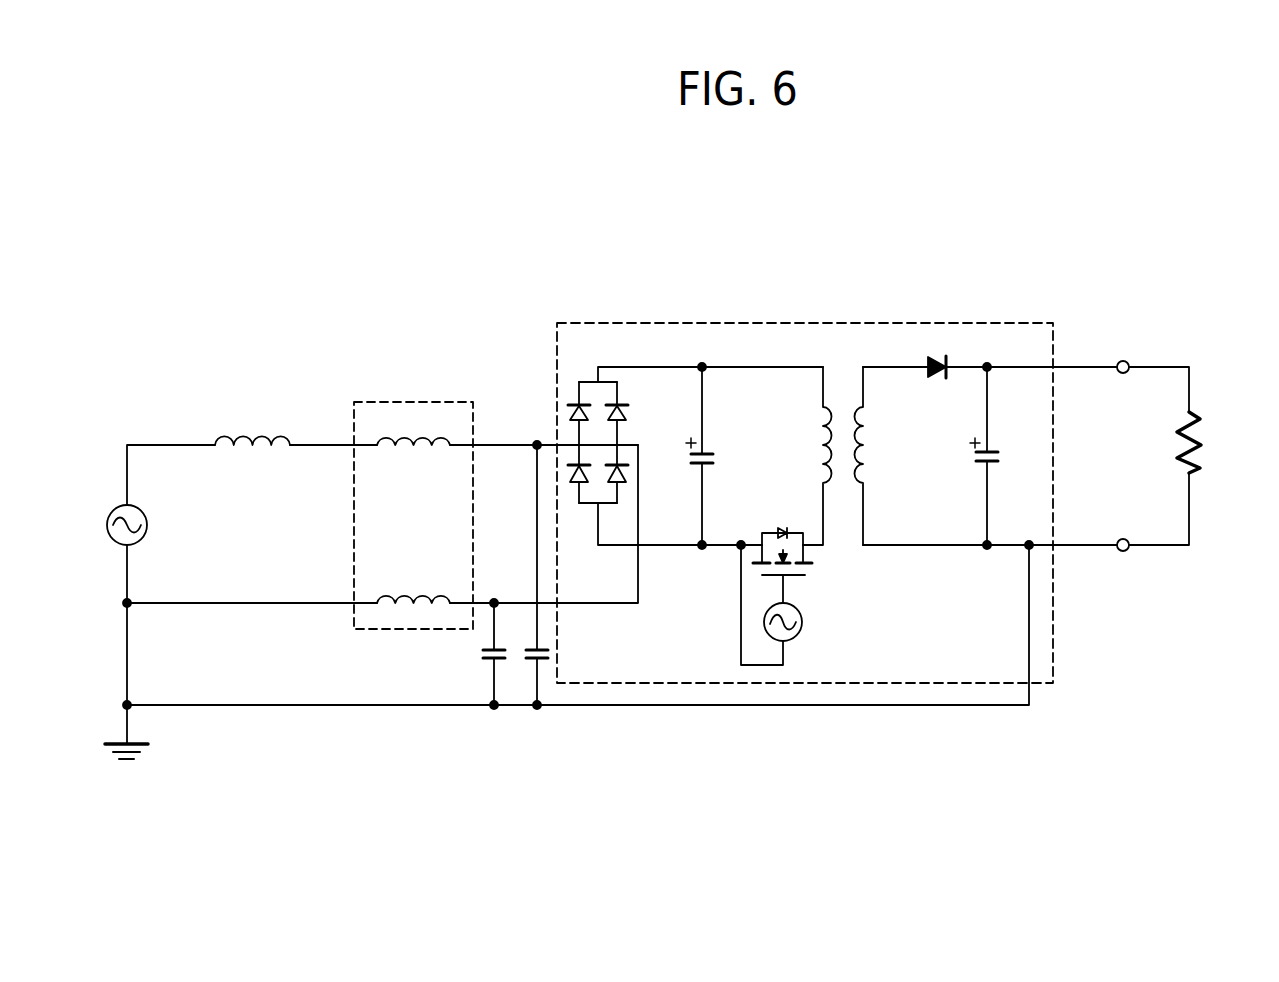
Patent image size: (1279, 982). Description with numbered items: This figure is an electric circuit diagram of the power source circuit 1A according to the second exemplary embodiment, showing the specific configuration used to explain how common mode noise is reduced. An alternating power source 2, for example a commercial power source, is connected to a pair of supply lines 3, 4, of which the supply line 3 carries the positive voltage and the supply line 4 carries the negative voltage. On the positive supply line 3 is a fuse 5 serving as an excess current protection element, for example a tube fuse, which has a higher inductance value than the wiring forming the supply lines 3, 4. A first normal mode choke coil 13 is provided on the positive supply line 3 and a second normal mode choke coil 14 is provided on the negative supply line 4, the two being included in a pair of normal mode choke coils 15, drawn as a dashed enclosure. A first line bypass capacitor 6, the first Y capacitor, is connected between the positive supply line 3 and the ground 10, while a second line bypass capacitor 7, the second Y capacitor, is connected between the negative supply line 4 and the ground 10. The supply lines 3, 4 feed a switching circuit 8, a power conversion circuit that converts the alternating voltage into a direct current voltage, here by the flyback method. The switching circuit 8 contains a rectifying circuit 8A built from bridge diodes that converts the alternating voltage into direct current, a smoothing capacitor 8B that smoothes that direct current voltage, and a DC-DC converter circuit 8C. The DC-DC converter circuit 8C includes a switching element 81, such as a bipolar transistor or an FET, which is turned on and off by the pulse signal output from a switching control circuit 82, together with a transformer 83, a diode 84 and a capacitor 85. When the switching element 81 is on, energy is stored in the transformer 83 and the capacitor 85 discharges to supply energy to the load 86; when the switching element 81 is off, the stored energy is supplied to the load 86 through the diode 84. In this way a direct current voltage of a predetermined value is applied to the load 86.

The power source circuit 1A is at (800, 246).
The alternating power source 2 is at (106, 522).
The supply line 3 is at (125, 468).
The supply line 4 is at (153, 606).
The fuse 5 is at (237, 441).
The first line bypass capacitor 6 is at (534, 659).
The second line bypass capacitor 7 is at (481, 656).
The switching circuit 8 is at (1031, 322).
The rectifying circuit 8A is at (566, 405).
The smoothing capacitor 8B is at (706, 451).
The DC-DC converter circuit 8C is at (842, 404).
The ground 10 is at (215, 707).
The first normal mode choke coil 13 is at (385, 438).
The second normal mode choke coil 14 is at (395, 605).
The pair of normal mode choke coils 15 is at (420, 401).
The switching element 81 is at (813, 564).
The switching control circuit 82 is at (805, 633).
The transformer 83 is at (827, 426).
The diode 84 is at (935, 352).
The capacitor 85 is at (984, 463).
The load 86 is at (1205, 432).